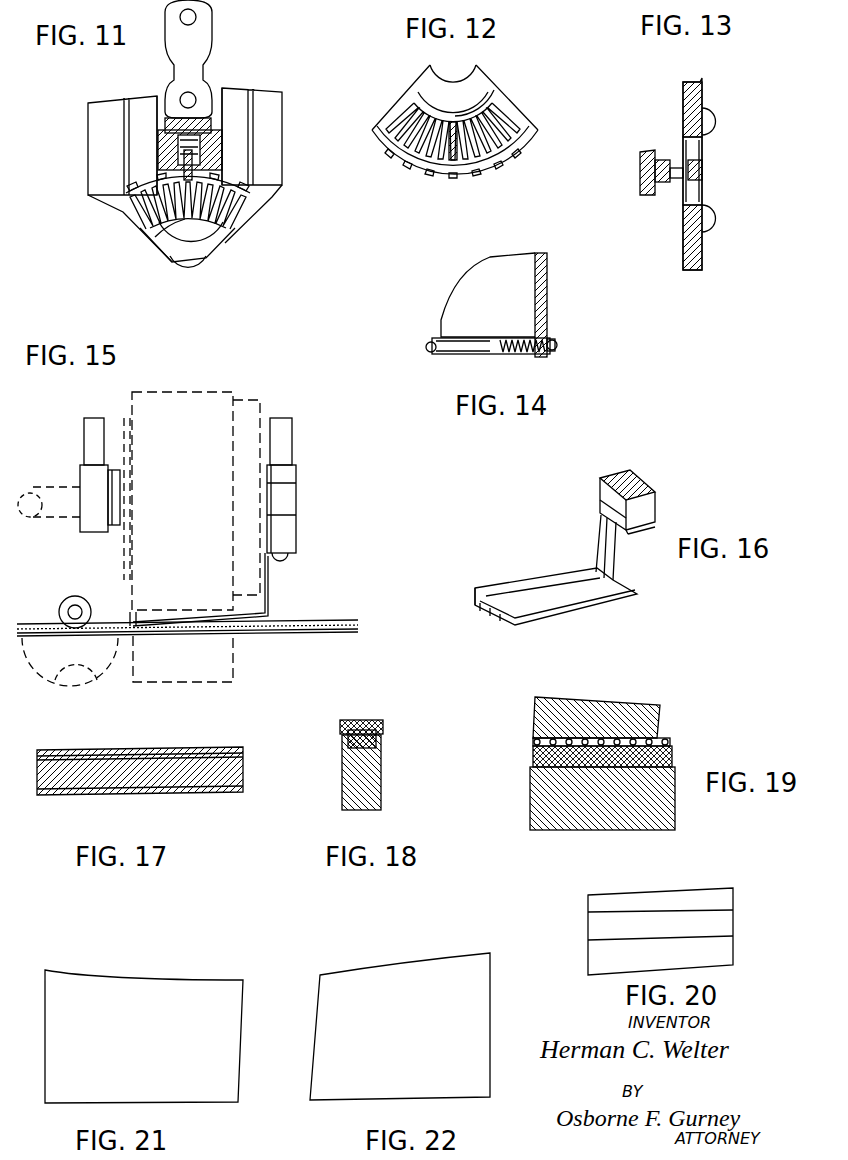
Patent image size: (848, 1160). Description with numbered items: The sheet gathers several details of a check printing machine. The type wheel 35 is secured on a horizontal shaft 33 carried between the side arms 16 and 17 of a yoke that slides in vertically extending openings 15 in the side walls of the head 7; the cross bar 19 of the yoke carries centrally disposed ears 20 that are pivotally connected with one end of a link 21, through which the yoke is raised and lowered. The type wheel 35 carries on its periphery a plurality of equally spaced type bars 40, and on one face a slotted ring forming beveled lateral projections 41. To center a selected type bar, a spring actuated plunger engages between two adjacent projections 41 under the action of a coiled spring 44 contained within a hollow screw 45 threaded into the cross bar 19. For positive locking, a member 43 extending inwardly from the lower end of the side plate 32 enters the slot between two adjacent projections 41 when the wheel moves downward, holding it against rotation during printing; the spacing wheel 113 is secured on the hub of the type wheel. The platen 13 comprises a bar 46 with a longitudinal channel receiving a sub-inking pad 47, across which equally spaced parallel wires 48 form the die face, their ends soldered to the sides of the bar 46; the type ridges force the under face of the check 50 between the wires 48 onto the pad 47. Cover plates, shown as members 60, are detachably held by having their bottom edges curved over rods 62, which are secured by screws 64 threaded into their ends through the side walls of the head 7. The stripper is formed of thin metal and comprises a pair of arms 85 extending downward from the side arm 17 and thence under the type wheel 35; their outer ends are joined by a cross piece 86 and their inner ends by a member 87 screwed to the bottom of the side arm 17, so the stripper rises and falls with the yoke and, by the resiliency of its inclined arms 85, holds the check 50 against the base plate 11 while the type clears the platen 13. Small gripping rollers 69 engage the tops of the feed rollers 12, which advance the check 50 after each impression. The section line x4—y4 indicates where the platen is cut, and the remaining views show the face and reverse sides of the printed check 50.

In FIG. 11, the head 7 is at (268, 142).
In FIG. 13, the head 7 is at (683, 98).
In FIG. 14, the head 7 is at (547, 272).
In FIG. 15, the base plate 11 is at (272, 636).
In FIG. 11, the feed rollers 12 is at (184, 172).
In FIG. 15, the feed rollers 12 is at (68, 668).
In FIG. 15, the platen 13 is at (236, 668).
In FIG. 11, the openings 15 is at (213, 101).
In FIG. 13, the openings 15 is at (697, 150).
In FIG. 15, the side arm 16 is at (84, 445).
In FIG. 15, the side arm 17 is at (290, 432).
In FIG. 16, the side arm 17 is at (650, 500).
In FIG. 11, the cross bar 19 is at (222, 140).
In FIG. 11, the ears 20 is at (196, 94).
In FIG. 11, the link 21 is at (200, 42).
In FIG. 13, the side plate 32 is at (705, 152).
In FIG. 15, the shaft 33 is at (40, 520).
In FIG. 11, the type wheel 35 is at (175, 250).
In FIG. 12, the type wheel 35 is at (478, 82).
In FIG. 13, the type wheel 35 is at (644, 152).
In FIG. 15, the type wheel 35 is at (212, 382).
In FIG. 19, the type wheel 35 is at (596, 702).
In FIG. 20, the type wheel 35 is at (590, 905).
In FIG. 11, the type bars 40 is at (258, 178).
In FIG. 12, the type bars 40 is at (493, 152).
In FIG. 20, the type bars 40 is at (720, 918).
In FIG. 11, the lateral projections 41 is at (156, 212).
In FIG. 12, the lateral projections 41 is at (500, 122).
In FIG. 13, the lateral projections 41 is at (664, 195).
In FIG. 15, the lateral projections 41 is at (249, 397).
In FIG. 12, the locking member 43 is at (452, 162).
In FIG. 13, the locking member 43 is at (704, 183).
In FIG. 11, the coiled spring 44 is at (158, 142).
In FIG. 11, the hollow screw 45 is at (170, 118).
In FIG. 17, the bar 46 is at (243, 753).
In FIG. 18, the bar 46 is at (381, 779).
In FIG. 19, the bar 46 is at (665, 805).
In FIG. 17, the sub-inking pad 47 is at (238, 772).
In FIG. 18, the sub-inking pad 47 is at (378, 741).
In FIG. 19, the sub-inking pad 47 is at (672, 760).
In FIG. 17, the wires 48 is at (216, 795).
In FIG. 18, the wires 48 is at (362, 720).
In FIG. 19, the wires 48 is at (663, 741).
In FIG. 15, the check 50 is at (312, 621).
In FIG. 21, the check 50 is at (172, 983).
In FIG. 22, the check 50 is at (392, 975).
In FIG. 14, the members 60 is at (488, 295).
In FIG. 14, the rods 62 is at (433, 355).
In FIG. 14, the screws 64 is at (556, 350).
In FIG. 15, the gripping rollers 69 is at (61, 605).
In FIG. 15, the arms 85 is at (268, 612).
In FIG. 16, the arms 85 is at (566, 588).
In FIG. 15, the cross piece 86 is at (130, 613).
In FIG. 16, the cross piece 86 is at (496, 612).
In FIG. 15, the member 87 is at (290, 556).
In FIG. 16, the member 87 is at (641, 534).
In FIG. 15, the spacing wheel 113 is at (124, 550).
In FIG. 17, the section line x4 is at (148, 750).
In FIG. 17, the section line y4 is at (150, 796).